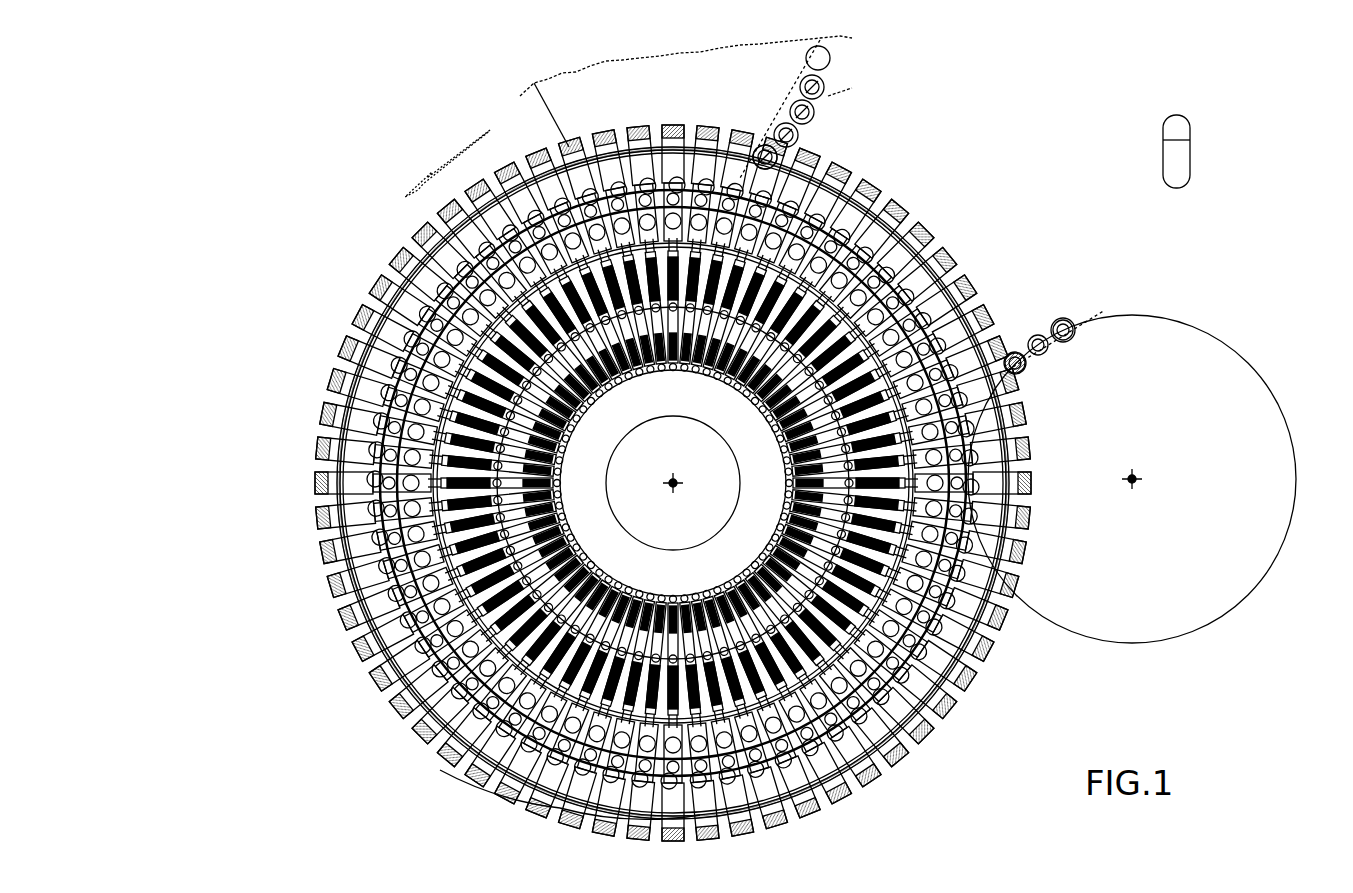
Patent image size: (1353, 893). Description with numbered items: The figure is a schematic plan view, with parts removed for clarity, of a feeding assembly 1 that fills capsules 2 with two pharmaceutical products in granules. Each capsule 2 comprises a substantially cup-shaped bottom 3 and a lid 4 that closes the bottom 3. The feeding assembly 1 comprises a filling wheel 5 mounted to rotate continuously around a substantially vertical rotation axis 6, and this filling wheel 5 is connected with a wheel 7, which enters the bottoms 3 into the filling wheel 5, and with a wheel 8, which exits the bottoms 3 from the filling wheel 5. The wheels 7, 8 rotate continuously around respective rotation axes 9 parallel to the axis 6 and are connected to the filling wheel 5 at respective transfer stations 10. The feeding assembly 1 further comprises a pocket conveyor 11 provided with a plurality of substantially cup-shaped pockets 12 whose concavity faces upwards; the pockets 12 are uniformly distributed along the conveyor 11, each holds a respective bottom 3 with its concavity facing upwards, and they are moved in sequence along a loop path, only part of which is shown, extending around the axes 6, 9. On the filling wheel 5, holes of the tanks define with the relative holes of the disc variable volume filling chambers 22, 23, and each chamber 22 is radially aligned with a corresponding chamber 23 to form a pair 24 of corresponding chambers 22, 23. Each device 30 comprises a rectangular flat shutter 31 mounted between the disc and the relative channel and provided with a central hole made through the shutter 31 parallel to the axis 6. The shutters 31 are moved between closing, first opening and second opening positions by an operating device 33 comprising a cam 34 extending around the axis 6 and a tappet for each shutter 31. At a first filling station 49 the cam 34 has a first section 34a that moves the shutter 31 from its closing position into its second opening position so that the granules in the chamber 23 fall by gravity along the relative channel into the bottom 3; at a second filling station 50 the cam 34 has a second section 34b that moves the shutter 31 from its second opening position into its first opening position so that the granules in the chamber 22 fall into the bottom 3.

The feeding assembly 1 is at (333, 220).
The capsule 2 is at (1220, 162).
The bottom 3 is at (826, 96).
The lid 4 is at (1172, 120).
The filling wheel 5 is at (303, 614).
The rotation axis 6 is at (680, 476).
The wheel 7 is at (533, 110).
The wheel 8 is at (1190, 316).
The rotation axis 9 is at (1136, 490).
The transfer station 10 is at (818, 150).
The pocket conveyor 11 is at (1060, 318).
The pocket 12 is at (1020, 345).
The variable volume filling chamber 22 is at (835, 790).
The variable volume filling chamber 23 is at (870, 772).
The pair of corresponding chambers 24 is at (930, 233).
The device 30 is at (478, 762).
The flat shutter 31 is at (345, 650).
The operating device 33 is at (835, 195).
The cam 34 is at (880, 215).
The first section 34a is at (330, 468).
The second section 34b is at (700, 800).
The first filling station 49 is at (318, 388).
The second filling station 50 is at (630, 825).